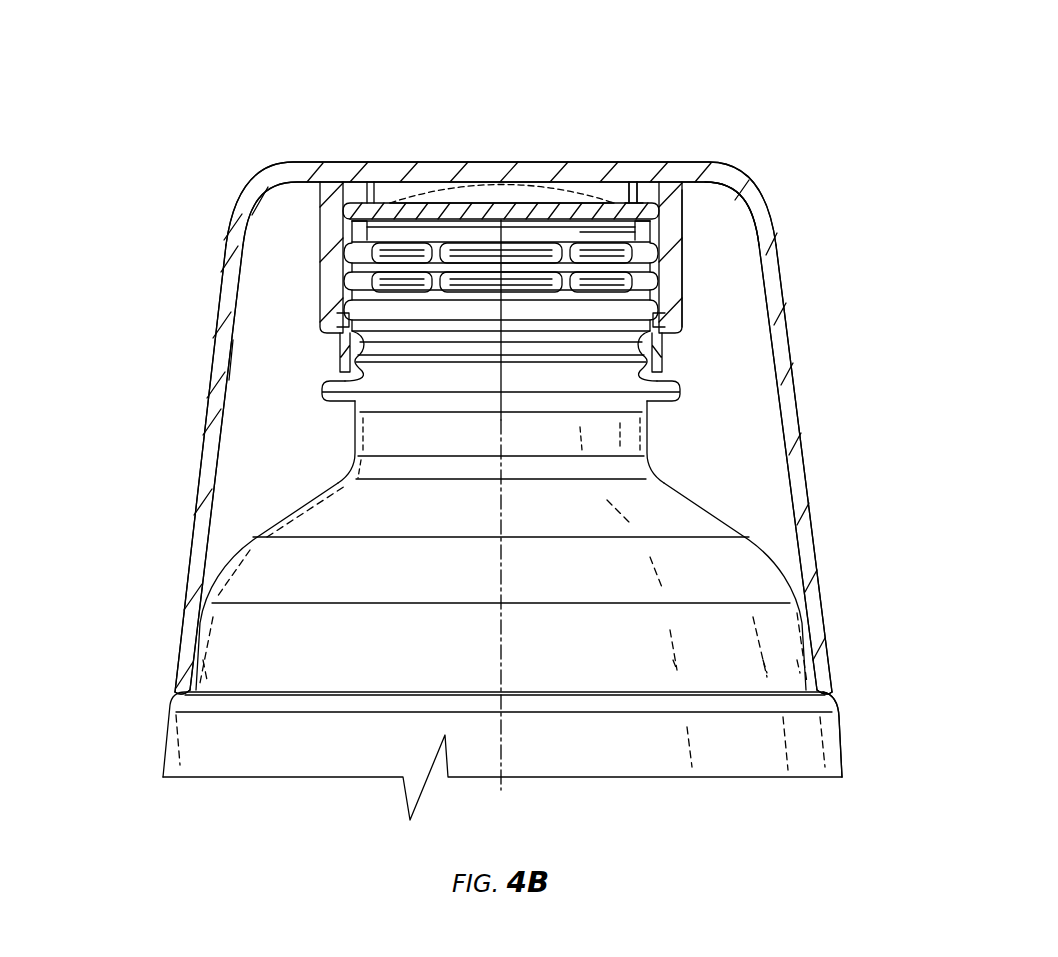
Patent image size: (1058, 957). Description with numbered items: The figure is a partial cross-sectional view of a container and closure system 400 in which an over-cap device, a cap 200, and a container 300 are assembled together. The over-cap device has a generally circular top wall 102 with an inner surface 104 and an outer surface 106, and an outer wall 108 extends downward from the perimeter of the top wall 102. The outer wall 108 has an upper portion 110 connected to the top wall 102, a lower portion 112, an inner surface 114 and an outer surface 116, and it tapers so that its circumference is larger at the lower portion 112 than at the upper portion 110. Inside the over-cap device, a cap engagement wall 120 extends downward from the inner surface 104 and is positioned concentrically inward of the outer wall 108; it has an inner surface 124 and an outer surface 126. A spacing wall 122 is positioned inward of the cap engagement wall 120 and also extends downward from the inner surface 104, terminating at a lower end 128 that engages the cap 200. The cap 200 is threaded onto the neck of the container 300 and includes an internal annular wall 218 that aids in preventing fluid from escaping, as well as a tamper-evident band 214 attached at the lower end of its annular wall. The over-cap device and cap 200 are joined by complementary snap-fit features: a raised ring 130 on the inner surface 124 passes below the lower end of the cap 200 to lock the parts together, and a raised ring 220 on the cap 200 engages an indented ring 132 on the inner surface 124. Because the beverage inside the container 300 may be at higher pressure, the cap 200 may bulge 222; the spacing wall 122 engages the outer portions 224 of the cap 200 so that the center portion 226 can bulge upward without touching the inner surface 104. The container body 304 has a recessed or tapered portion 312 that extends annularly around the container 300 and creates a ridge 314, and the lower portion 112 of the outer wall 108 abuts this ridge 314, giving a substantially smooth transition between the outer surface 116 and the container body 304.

The container and closure system 400 is at (451, 354).
The top wall 102 is at (287, 162).
The inner surface 104 is at (267, 202).
The outer surface 106 is at (318, 162).
The outer wall 108 is at (198, 482).
The upper portion 110 is at (253, 173).
The lower portion 112 is at (173, 690).
The inner surface 114 is at (225, 392).
The outer surface 116 is at (200, 443).
The cap engagement wall 120 is at (672, 292).
The spacing wall 122 is at (372, 208).
The inner surface 124 is at (747, 202).
The outer surface 126 is at (684, 255).
The lower end 128 is at (627, 202).
The raised ring 130 is at (662, 333).
The indented ring 132 is at (337, 318).
The cap 200 is at (522, 210).
The tamper-evident band 214 is at (340, 362).
The internal annular wall 218 is at (628, 228).
The raised ring 220 is at (667, 319).
The bulge 222 is at (432, 192).
The outer portions 224 is at (365, 200).
The center portion 226 is at (502, 203).
The container 300 is at (163, 775).
The container body 304 is at (840, 758).
The recessed or tapered portion 312 is at (200, 607).
The ridge 314 is at (173, 700).